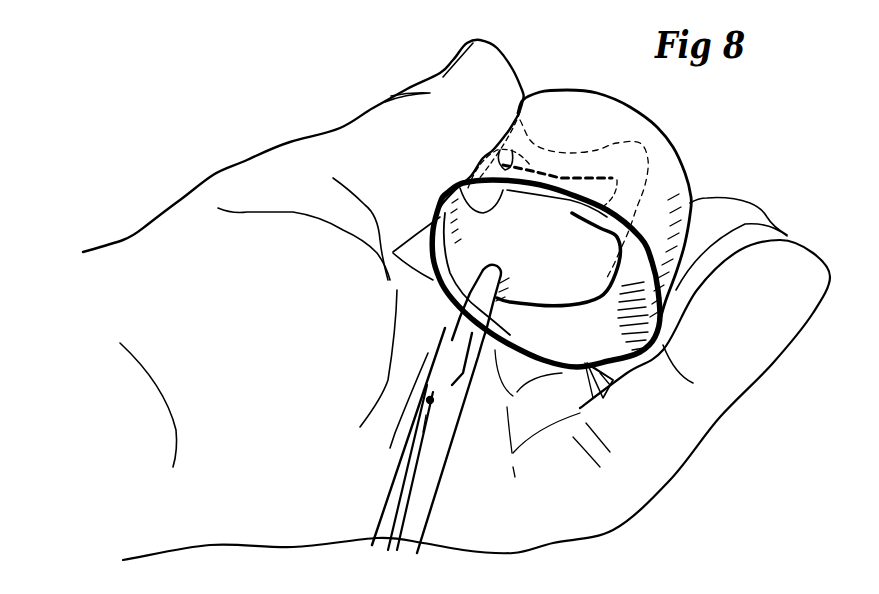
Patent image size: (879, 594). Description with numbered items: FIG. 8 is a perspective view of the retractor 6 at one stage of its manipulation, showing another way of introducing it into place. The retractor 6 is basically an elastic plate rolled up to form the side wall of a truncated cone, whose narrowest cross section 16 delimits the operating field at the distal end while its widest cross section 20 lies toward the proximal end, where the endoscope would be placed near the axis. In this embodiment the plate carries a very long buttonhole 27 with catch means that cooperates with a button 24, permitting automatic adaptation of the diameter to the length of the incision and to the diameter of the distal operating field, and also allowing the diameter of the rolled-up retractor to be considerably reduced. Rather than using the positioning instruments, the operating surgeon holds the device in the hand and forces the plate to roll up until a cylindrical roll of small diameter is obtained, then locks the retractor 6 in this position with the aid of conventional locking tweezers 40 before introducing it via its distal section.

The retractor 6 is at (556, 60).
The narrowest cross section 16 is at (640, 117).
The widest cross section 20 is at (593, 398).
The button 24 is at (445, 200).
The very long buttonhole 27 is at (493, 155).
The locking tweezers 40 is at (428, 527).